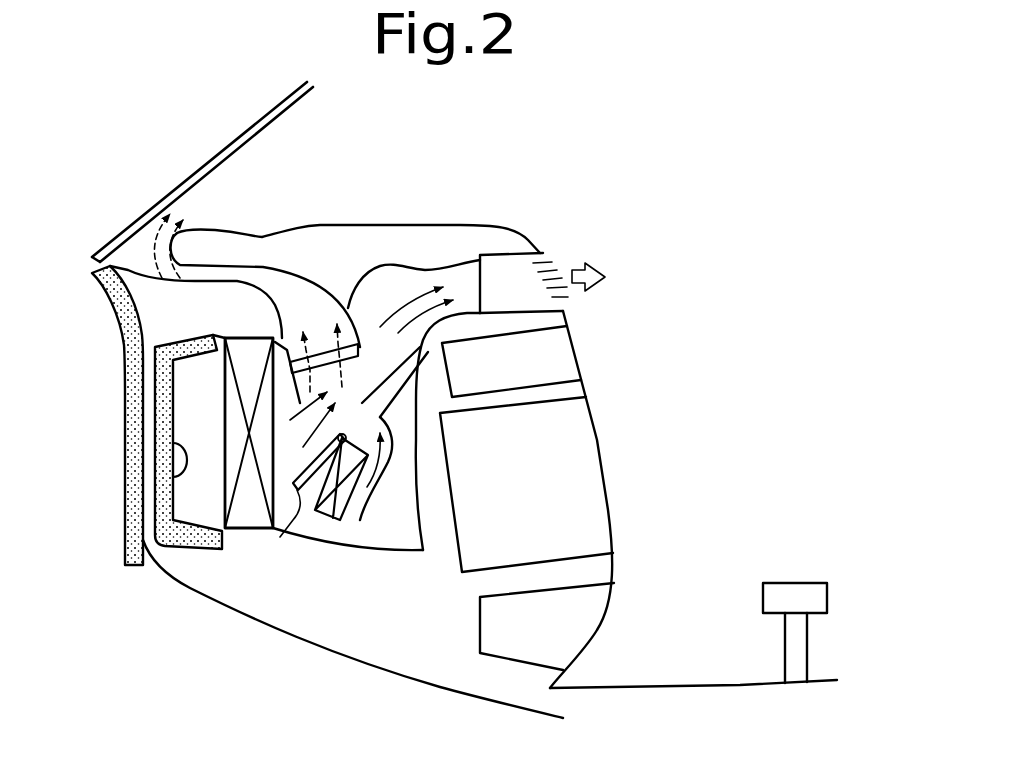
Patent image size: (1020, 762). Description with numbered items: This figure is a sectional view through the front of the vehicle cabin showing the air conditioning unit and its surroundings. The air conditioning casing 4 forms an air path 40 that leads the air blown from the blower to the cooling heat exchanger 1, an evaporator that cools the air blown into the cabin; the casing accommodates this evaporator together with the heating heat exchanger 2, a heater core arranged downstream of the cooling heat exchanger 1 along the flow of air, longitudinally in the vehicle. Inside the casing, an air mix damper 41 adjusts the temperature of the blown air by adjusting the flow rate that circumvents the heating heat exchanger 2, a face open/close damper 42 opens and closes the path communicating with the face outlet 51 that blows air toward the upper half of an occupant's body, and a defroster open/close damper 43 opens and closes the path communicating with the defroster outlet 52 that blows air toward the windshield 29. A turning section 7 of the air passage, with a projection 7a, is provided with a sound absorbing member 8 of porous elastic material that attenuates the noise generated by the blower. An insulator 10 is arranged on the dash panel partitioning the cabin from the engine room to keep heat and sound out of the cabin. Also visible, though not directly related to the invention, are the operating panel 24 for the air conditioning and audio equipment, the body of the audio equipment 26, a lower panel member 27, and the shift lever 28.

The cooling heat exchanger 1 is at (262, 352).
The heating heat exchanger 2 is at (325, 510).
The air conditioning casing 4 is at (224, 322).
The turning section 7 is at (187, 402).
The projection 7a is at (177, 474).
The sound absorbing member 8 is at (162, 372).
The insulator 10 is at (125, 311).
The operating panel 24 is at (565, 360).
The body of the audio equipment 26 is at (583, 477).
The lower instrument panel member 27 is at (588, 622).
The shift lever 28 is at (787, 597).
The windshield 29 is at (280, 113).
The air path 40 is at (198, 512).
The air mix damper 41 is at (281, 550).
The face open/close damper 42 is at (414, 420).
The defroster open/close damper 43 is at (315, 357).
The face outlet 51 is at (512, 277).
The defroster outlet 52 is at (160, 278).